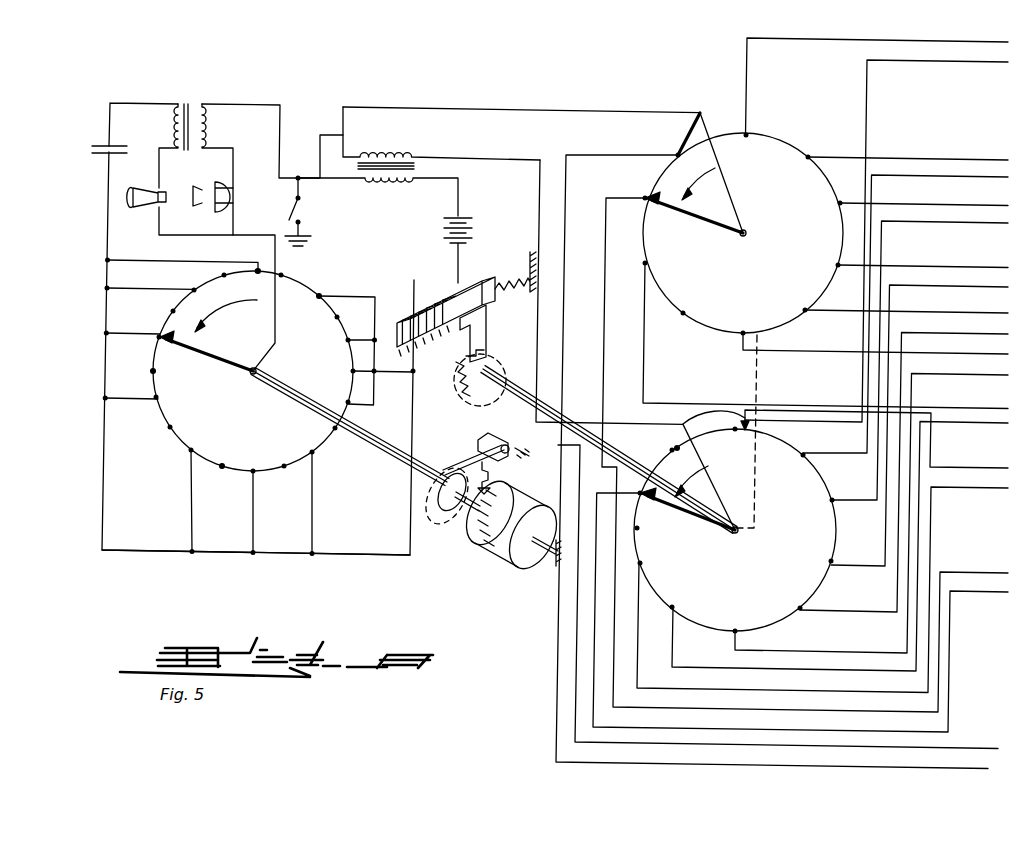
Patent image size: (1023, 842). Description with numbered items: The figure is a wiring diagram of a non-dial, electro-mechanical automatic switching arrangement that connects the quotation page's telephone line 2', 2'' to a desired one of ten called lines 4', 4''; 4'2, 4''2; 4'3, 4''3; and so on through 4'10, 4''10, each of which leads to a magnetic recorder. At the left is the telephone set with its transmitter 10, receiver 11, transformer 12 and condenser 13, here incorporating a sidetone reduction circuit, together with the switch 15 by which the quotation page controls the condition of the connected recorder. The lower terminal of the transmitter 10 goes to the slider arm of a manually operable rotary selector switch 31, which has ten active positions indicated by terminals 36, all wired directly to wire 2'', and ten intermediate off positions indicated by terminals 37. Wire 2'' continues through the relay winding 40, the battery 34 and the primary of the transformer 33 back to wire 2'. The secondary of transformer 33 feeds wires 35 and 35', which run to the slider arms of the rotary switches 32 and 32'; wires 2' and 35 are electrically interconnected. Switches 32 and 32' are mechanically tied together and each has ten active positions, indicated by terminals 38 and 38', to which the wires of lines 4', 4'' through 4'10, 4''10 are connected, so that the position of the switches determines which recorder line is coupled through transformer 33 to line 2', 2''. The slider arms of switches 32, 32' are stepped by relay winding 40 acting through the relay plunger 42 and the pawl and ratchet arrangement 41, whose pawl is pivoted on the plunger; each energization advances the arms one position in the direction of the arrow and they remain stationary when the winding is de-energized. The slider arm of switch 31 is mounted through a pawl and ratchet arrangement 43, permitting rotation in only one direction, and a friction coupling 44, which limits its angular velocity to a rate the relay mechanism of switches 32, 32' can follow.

The transmitter 10 is at (195, 190).
The receiver 11 is at (132, 196).
The transformer 12 is at (185, 103).
The condenser 13 is at (121, 147).
The switch 15 is at (316, 206).
The telephone line wire 2' is at (272, 131).
The telephone line wire 2'' is at (256, 542).
The manually operable rotary selector switch 31 is at (323, 357).
The rotary switch 32 is at (743, 331).
The rotary switch 32' is at (735, 530).
The transformer 33 is at (417, 166).
The battery 34 is at (470, 244).
The wire 35 is at (543, 160).
The wire 35' is at (614, 335).
The active terminals 36 is at (258, 271).
The intermediate terminals 37 is at (218, 466).
The terminals 38 is at (715, 132).
The terminals 38' is at (655, 439).
The relay winding 40 is at (434, 305).
The pawl and ratchet arrangement 41 is at (481, 343).
The relay plunger 42 is at (471, 284).
The pawl and ratchet arrangement 43 is at (468, 458).
The friction coupling 44 is at (532, 510).
The telephone line wire 4' is at (877, 80).
The telephone line wire 4'' is at (876, 241).
The telephone line wire 4'2 is at (908, 154).
The telephone line wire 4''2 is at (905, 314).
The telephone line wire 4'3 is at (925, 199).
The telephone line wire 4''3 is at (921, 360).
The telephone line wire 4'10 is at (778, 598).
The telephone line wire 4''10 is at (789, 470).